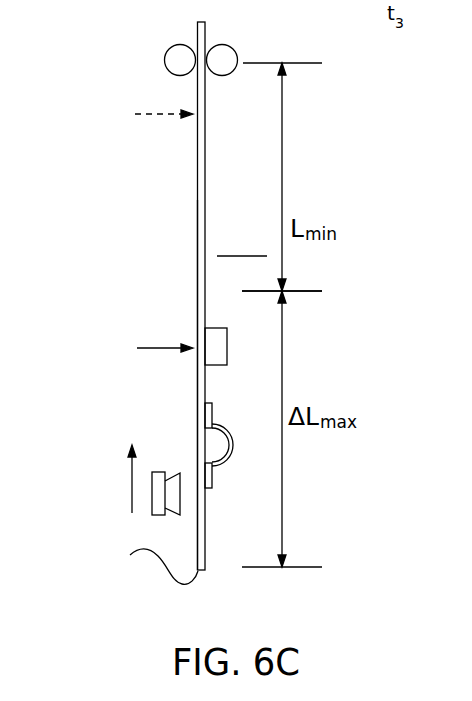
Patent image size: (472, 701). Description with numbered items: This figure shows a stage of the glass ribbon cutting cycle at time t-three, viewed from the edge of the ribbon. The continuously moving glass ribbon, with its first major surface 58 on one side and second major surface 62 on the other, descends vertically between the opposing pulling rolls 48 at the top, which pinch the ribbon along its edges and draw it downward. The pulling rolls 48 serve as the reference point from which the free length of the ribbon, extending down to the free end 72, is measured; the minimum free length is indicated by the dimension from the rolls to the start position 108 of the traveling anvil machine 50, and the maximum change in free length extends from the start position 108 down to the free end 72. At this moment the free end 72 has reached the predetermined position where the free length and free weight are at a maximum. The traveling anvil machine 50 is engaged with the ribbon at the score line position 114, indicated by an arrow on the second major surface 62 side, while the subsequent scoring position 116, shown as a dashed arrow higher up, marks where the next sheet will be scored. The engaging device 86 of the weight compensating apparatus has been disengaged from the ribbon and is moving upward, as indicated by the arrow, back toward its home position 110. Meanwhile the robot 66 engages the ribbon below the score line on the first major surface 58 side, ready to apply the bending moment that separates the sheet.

The pulling rolls 48 is at (178, 44).
The subsequent scoring position 116 is at (157, 115).
The first major surface 58 is at (205, 198).
The second major surface 62 is at (197, 258).
The home position 110 is at (232, 255).
The score line position 114 is at (153, 347).
The start position 108 is at (302, 291).
The traveling anvil machine 50 is at (227, 347).
The engaging device 86 is at (158, 477).
The robot 66 is at (232, 462).
The free end 72 is at (145, 566).